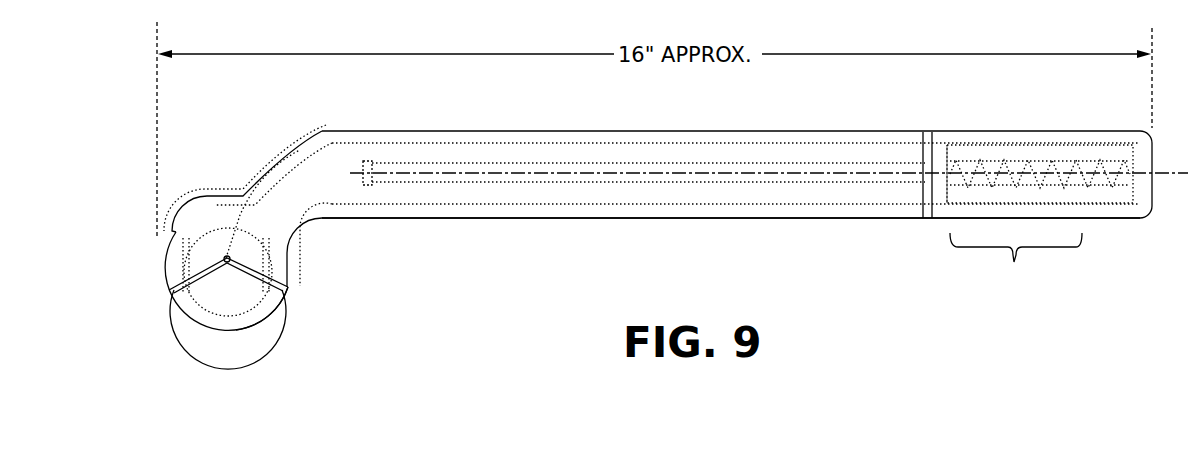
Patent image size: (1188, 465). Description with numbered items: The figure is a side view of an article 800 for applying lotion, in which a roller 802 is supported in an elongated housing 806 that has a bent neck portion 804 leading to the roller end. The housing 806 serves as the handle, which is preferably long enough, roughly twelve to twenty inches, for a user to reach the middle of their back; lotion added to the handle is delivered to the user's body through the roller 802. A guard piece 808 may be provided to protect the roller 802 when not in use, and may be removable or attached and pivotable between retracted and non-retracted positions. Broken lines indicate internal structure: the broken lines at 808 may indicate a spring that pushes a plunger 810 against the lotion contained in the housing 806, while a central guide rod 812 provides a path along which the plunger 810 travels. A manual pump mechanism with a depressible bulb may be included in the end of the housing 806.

The article 800 is at (452, 121).
The roller 802 is at (230, 305).
The bent neck portion 804 is at (245, 175).
The elongated housing 806 is at (713, 218).
The guard piece 808 is at (275, 315).
The plunger 810 is at (936, 222).
The central guide rod 812 is at (390, 185).